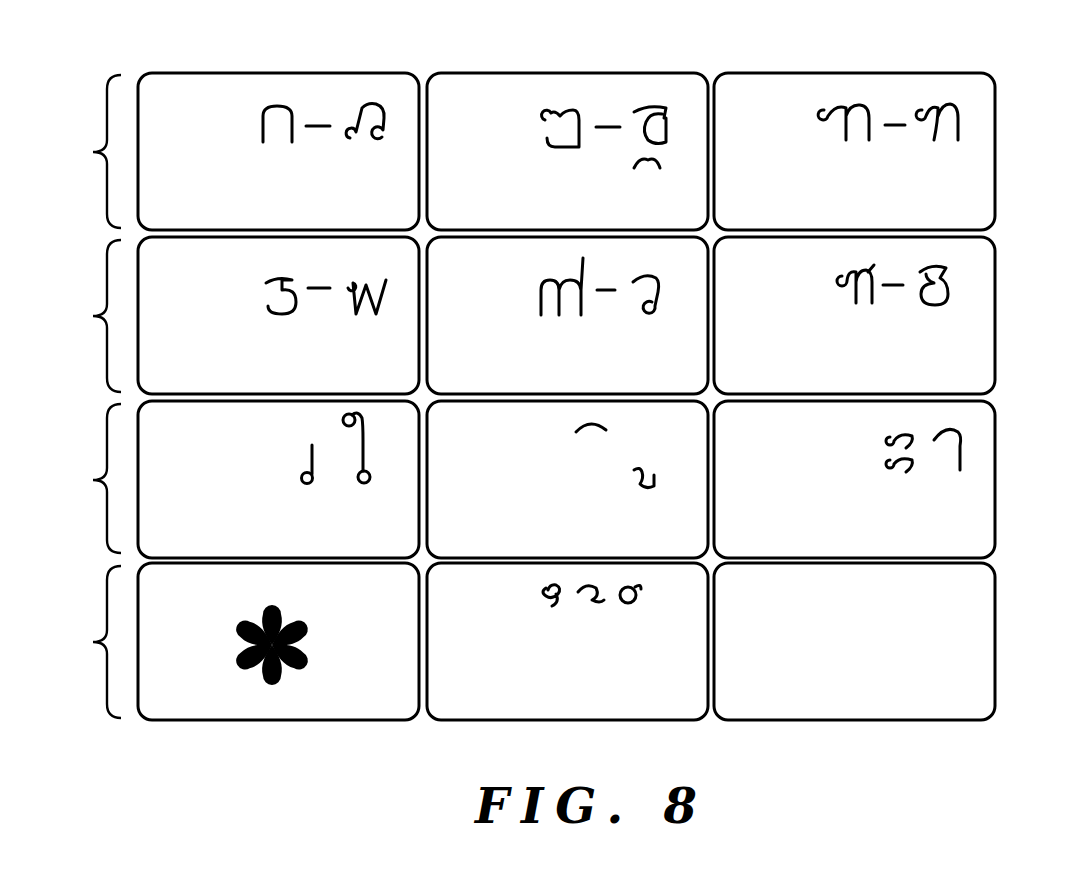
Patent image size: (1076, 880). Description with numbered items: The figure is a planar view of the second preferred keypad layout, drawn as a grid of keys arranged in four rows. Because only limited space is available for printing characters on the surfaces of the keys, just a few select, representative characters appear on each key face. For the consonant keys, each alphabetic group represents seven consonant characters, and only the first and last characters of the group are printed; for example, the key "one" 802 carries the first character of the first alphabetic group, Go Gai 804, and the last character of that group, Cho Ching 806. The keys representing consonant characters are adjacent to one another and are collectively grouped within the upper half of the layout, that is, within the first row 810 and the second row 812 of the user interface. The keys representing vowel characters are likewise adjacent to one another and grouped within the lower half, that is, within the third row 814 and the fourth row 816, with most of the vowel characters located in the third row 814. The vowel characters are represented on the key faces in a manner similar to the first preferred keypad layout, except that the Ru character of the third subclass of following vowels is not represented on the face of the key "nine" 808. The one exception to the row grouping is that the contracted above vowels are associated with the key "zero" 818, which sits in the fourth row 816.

The key "1" 802 is at (181, 73).
The Go Gai character 804 is at (278, 98).
The Cho Ching character 806 is at (363, 95).
The key "9" 808 is at (997, 477).
The first row 810 is at (93, 152).
The second row 812 is at (93, 316).
The third row 814 is at (93, 480).
The fourth row 816 is at (93, 642).
The key "0" (zero) 818 is at (580, 722).